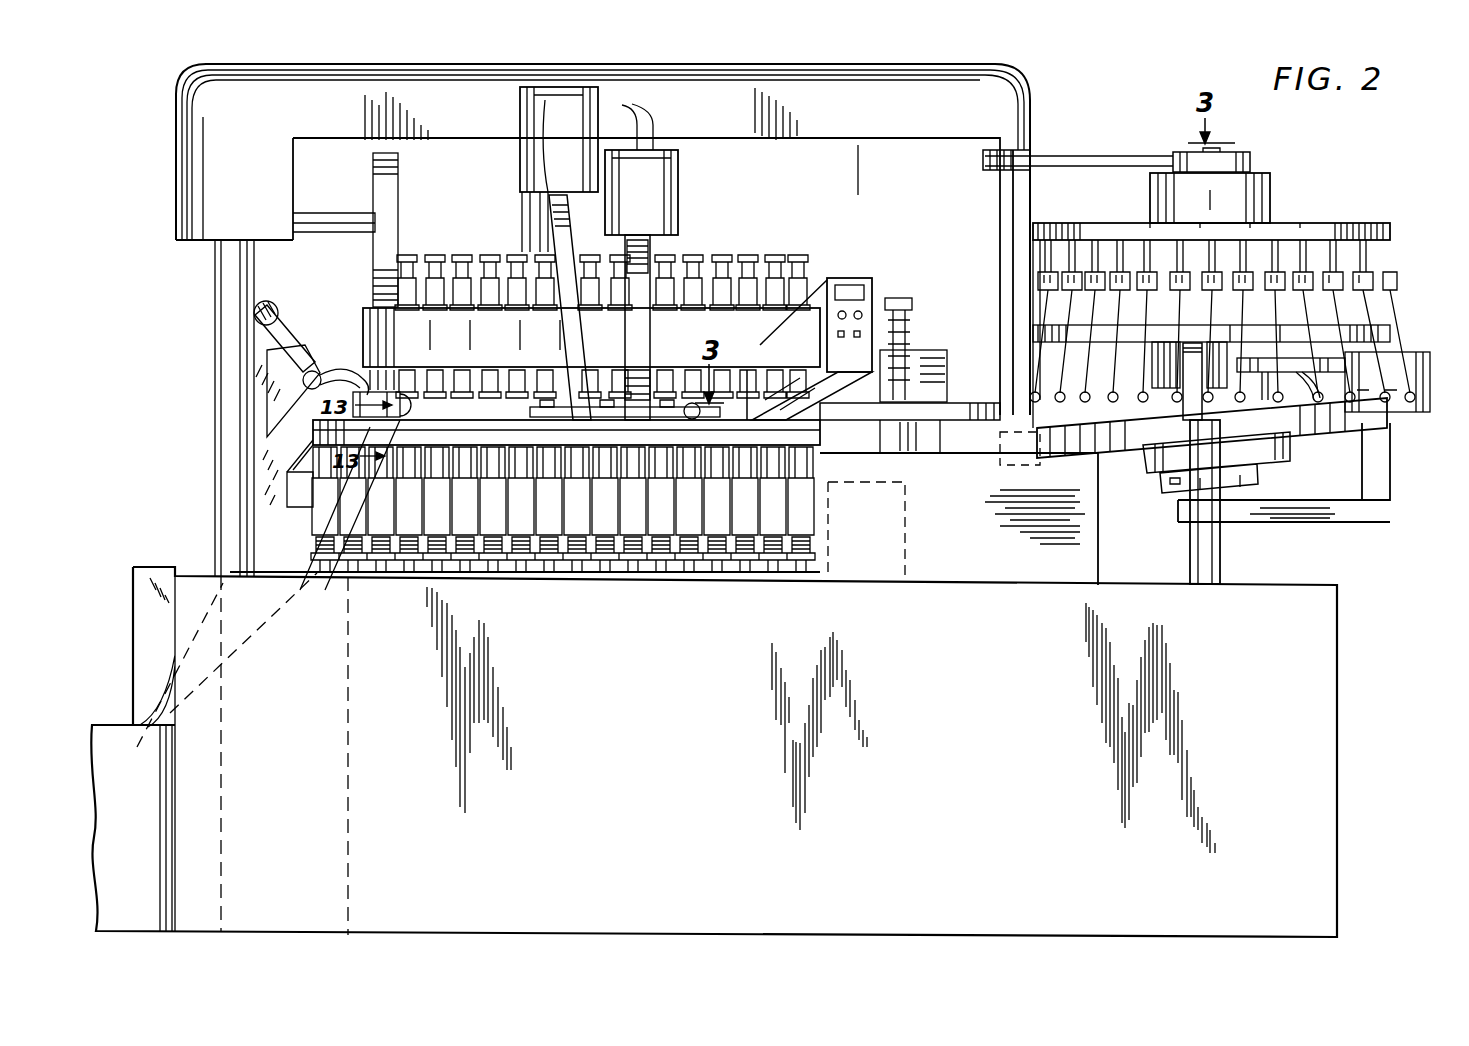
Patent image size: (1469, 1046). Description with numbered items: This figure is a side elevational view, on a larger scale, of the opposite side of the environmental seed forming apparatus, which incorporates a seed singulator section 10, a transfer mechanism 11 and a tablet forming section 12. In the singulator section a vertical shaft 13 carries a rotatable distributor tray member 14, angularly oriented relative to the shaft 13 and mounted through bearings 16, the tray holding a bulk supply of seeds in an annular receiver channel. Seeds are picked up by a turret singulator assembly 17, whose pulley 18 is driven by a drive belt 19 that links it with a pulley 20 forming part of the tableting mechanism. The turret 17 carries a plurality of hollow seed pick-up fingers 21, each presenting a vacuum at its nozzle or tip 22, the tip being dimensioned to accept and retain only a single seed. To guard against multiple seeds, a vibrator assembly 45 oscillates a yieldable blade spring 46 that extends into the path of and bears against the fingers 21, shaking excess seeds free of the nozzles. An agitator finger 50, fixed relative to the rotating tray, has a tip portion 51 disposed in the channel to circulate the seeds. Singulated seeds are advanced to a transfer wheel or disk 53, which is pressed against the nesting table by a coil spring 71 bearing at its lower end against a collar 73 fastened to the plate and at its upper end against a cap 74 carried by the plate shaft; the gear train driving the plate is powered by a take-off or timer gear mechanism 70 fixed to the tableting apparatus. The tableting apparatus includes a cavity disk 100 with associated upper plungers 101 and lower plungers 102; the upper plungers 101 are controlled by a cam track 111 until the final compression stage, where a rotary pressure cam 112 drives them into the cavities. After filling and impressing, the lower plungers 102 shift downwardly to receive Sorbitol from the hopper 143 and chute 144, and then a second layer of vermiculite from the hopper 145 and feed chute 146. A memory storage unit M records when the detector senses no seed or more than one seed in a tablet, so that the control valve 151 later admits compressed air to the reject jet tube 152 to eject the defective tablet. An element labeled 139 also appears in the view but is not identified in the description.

The seed singulator section 10 is at (1326, 187).
The transfer mechanism 11 is at (942, 316).
The tablet forming section 12 is at (428, 160).
The vertical shaft 13 is at (1221, 551).
The rotatable distributor tray member 14 is at (1108, 448).
The bearings 16 is at (1282, 458).
The turret singulator assembly 17 is at (1413, 214).
The pulley 18 is at (1182, 152).
The drive belt 19 is at (1083, 156).
The pulley 20 is at (989, 169).
The seed pick-up fingers 21 is at (1400, 333).
The nozzle or tip 22 is at (1038, 397).
The vibrator assembly 45 is at (1420, 388).
The blade spring 46 is at (1314, 398).
The agitator finger 50 is at (1292, 398).
The tip portion 51 is at (1262, 403).
The transfer wheel or disk 53 is at (983, 405).
The take-off or timer gear mechanism 70 is at (353, 520).
The coil spring 71 is at (906, 331).
The collar 73 is at (906, 405).
The cap 74 is at (910, 298).
The cavity disk 100 is at (820, 437).
The upper plungers 101 is at (771, 258).
The lower plungers 102 is at (796, 473).
The cam track 111 is at (365, 312).
The rotary pressure cam 112 is at (400, 198).
The roller 139 is at (688, 419).
The hopper 143 is at (678, 170).
The chute 144 is at (649, 325).
The hopper 145 is at (522, 101).
The feed chute 146 is at (564, 343).
The control valve 151 is at (282, 340).
The reject jet tube 152 is at (345, 373).
The memory storage unit M is at (863, 278).